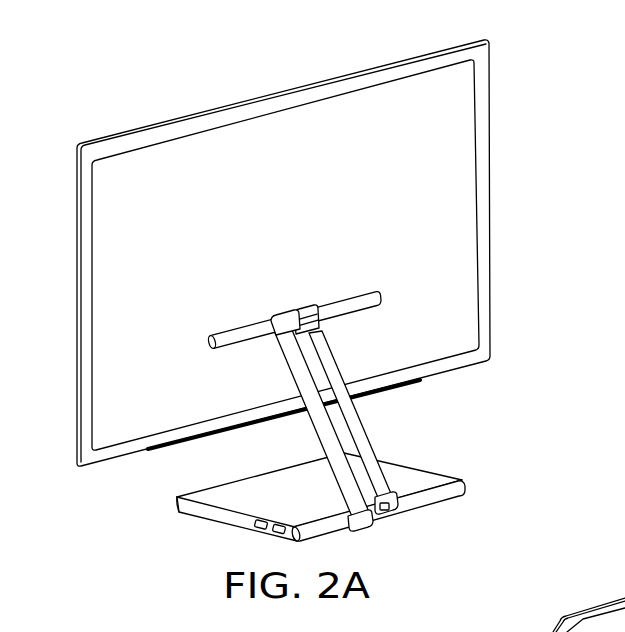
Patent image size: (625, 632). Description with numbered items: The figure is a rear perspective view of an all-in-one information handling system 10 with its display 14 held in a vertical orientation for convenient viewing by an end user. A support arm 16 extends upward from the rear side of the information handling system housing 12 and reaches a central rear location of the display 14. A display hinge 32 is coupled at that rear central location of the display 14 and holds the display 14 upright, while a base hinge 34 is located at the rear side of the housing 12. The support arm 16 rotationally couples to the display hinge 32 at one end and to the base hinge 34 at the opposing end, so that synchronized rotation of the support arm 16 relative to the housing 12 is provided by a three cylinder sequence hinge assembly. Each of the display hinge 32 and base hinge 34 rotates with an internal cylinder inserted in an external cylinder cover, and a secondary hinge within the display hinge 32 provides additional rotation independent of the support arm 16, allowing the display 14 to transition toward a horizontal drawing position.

The information handling system 10 is at (216, 70).
The information handling system housing 12 is at (197, 513).
The display 14 is at (141, 128).
The support arm 16 is at (374, 442).
The display hinge 32 is at (238, 323).
The base hinge 34 is at (470, 484).